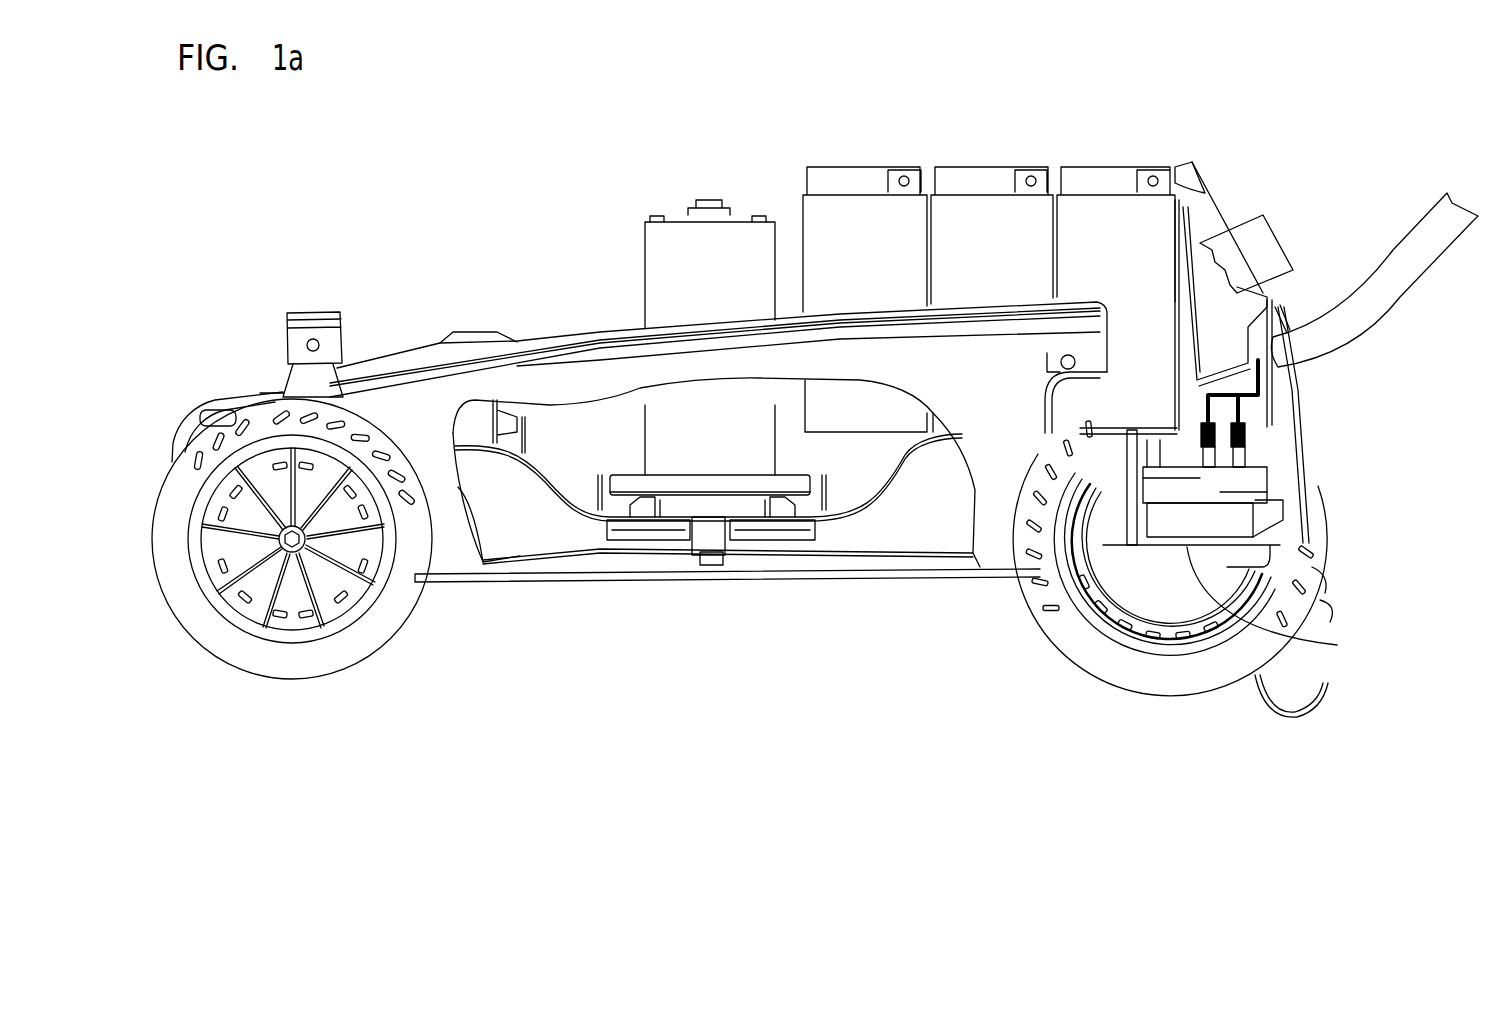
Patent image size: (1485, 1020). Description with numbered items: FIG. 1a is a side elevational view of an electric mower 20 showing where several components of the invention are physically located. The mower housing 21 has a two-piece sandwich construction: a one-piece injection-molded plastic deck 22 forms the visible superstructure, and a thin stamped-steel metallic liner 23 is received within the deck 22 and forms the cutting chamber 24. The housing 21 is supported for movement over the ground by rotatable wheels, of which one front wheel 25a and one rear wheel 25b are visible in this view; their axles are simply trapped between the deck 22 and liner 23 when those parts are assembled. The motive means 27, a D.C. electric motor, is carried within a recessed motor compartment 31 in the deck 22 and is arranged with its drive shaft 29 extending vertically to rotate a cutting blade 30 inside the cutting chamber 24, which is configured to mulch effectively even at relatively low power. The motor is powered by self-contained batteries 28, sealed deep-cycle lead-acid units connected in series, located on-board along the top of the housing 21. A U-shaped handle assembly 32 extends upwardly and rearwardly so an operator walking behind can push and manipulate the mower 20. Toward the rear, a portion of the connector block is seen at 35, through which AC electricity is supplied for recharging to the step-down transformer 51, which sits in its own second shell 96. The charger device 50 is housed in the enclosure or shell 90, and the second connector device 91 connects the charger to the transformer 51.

The electric mower 20 is at (459, 215).
The mower housing 21 is at (398, 355).
The plastic deck 22 is at (1087, 310).
The metallic liner 23 is at (548, 560).
The cutting chamber 24 is at (500, 528).
The front wheel 25a is at (312, 660).
The rear wheel 25b is at (1103, 660).
The motive means 27 is at (672, 250).
The batteries 28 is at (842, 215).
The drive shaft 29 is at (712, 540).
The cutting blade 30 is at (840, 572).
The motor compartment 31 is at (570, 425).
The handle assembly 32 is at (1398, 285).
The portion of connector block 35 is at (1270, 250).
The charger device 50 is at (1205, 215).
The transformer 51 is at (1255, 480).
The enclosure/shell 90 is at (1257, 310).
The second connector device 91 is at (1243, 408).
The second shell 96 is at (1285, 525).